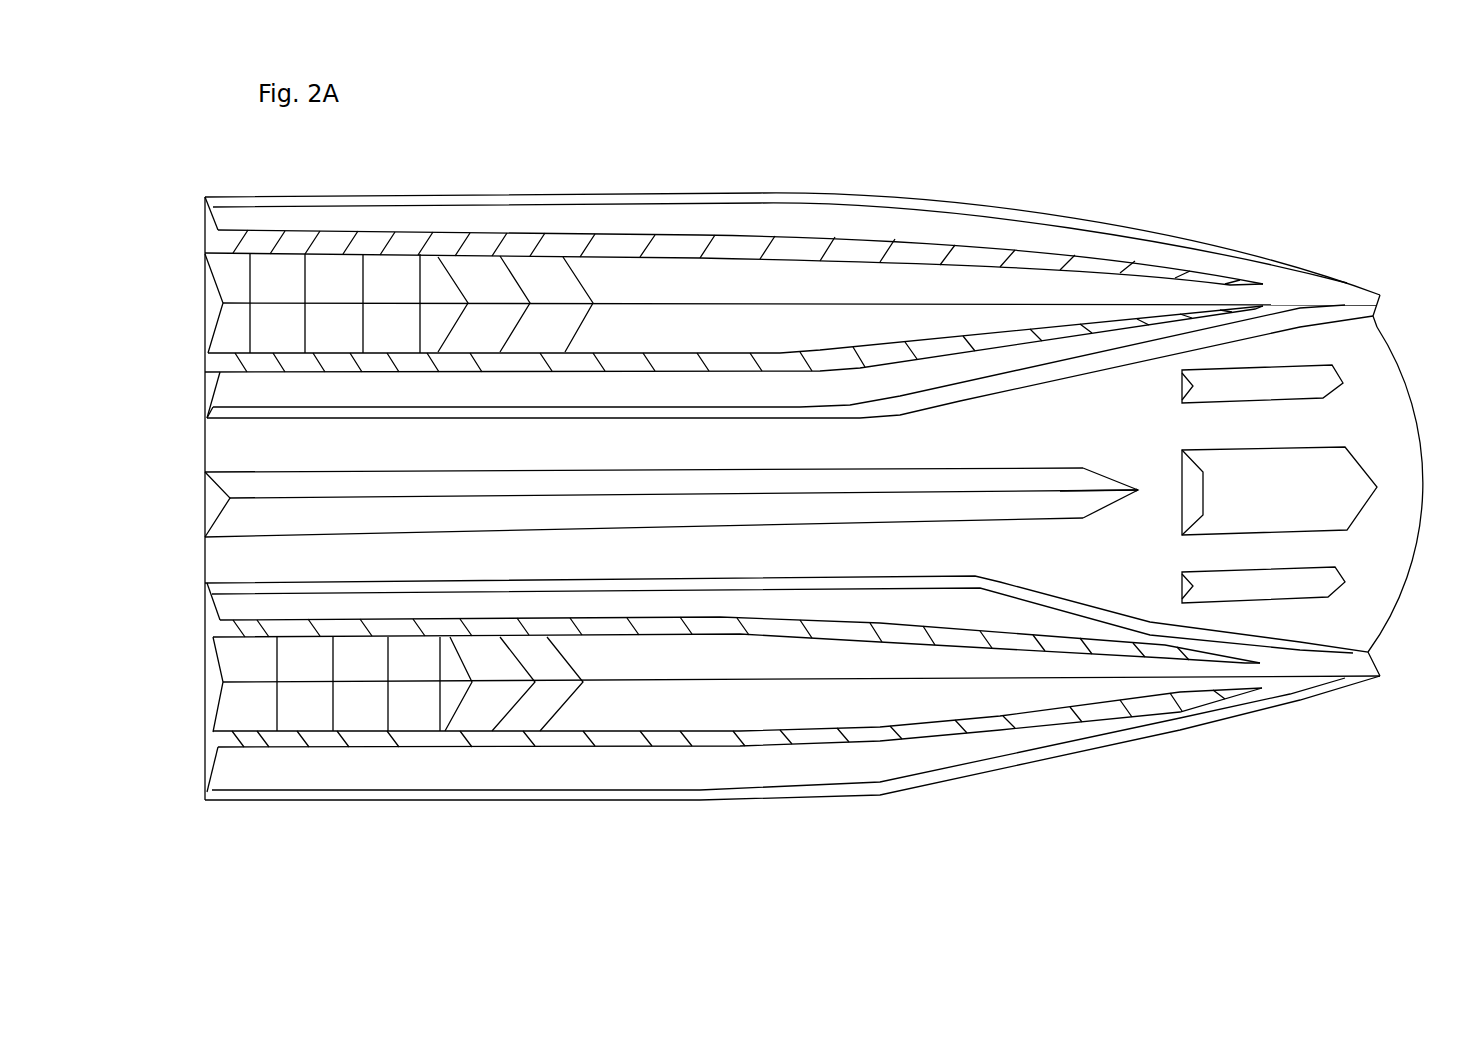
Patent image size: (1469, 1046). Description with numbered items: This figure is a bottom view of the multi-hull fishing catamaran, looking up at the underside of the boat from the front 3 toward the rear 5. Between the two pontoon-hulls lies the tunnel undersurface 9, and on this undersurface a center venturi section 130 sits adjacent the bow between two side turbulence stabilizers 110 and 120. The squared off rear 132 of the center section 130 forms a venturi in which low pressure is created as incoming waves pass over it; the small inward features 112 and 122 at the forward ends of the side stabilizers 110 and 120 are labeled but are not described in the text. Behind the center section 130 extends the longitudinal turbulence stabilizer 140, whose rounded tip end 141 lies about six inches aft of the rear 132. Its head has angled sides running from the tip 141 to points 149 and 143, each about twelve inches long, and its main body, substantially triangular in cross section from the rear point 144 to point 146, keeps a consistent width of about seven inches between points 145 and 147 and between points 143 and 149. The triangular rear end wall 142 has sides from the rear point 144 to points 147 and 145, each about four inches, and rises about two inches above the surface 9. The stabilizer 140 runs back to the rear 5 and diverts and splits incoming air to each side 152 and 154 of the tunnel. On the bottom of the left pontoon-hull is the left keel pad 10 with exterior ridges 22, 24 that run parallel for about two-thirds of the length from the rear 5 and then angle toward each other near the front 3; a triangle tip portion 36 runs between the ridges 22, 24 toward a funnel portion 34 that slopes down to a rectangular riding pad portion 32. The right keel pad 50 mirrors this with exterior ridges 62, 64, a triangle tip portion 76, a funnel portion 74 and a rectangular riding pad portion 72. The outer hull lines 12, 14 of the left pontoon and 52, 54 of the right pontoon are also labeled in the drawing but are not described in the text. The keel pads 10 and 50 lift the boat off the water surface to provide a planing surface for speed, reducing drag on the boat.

The front portion 3 is at (1417, 428).
The rear 5 is at (203, 445).
The tunnel undersurface 9 is at (218, 430).
The left keel pad 10 is at (756, 754).
The lower engine lower skin 12 is at (205, 800).
The lower engine upper skin 14 is at (205, 585).
The exterior ridge 22 is at (487, 742).
The exterior ridge 24 is at (655, 622).
The rectangular riding pad portion 32 is at (227, 713).
The funnel portion 34 is at (553, 703).
The triangle tip portion 36 is at (752, 682).
The right keel pad 50 is at (750, 240).
The upper engine lower skin 52 is at (305, 415).
The upper engine upper skin 54 is at (362, 197).
The exterior ridge 62 is at (228, 363).
The exterior ridge 64 is at (228, 242).
The rectangular riding pad portion 72 is at (227, 325).
The funnel portion 74 is at (478, 268).
The triangle tip portion 76 is at (663, 300).
The side turbulence stabilizer 110 is at (1228, 385).
The upper control element inlet notch 112 is at (1178, 387).
The side turbulence stabilizer 120 is at (1231, 586).
The lower control element inlet notch 122 is at (1180, 583).
The center venturi section 130 is at (1250, 509).
The rear 132 is at (1193, 503).
The longitudinal turbulence stabilizer 140 is at (643, 495).
The rounded tip end 141 is at (1138, 488).
The triangular rear end wall 142 is at (210, 500).
The head side point 143 is at (1085, 518).
The rear point 144 is at (230, 498).
The body width point 145 is at (205, 537).
The body end point 146 is at (1078, 492).
The body width point 147 is at (205, 472).
The head side point 149 is at (1087, 468).
The tunnel side 152 is at (847, 448).
The tunnel side 154 is at (870, 553).